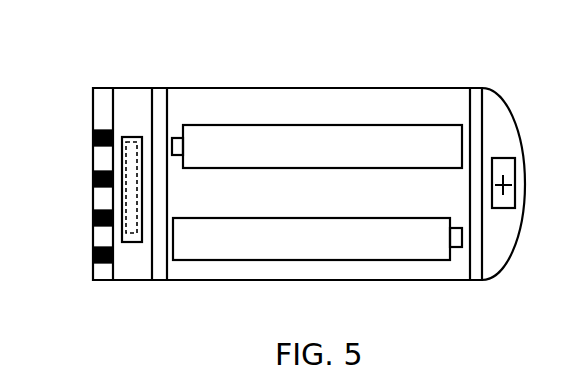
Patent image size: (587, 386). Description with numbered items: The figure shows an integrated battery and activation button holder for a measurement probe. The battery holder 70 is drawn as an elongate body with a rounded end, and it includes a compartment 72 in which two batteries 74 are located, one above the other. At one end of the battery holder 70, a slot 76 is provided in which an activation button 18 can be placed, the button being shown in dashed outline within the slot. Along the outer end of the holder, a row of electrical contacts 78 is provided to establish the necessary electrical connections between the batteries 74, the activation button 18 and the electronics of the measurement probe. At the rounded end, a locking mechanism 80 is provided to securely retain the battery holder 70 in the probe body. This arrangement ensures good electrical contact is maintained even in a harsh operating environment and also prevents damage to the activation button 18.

The battery holder 70 is at (512, 78).
The compartment 72 is at (277, 88).
The batteries 74 is at (338, 218).
The slot 76 is at (128, 137).
The activation button 18 is at (132, 137).
The electrical contacts 78 is at (93, 137).
The locking mechanism 80 is at (515, 186).